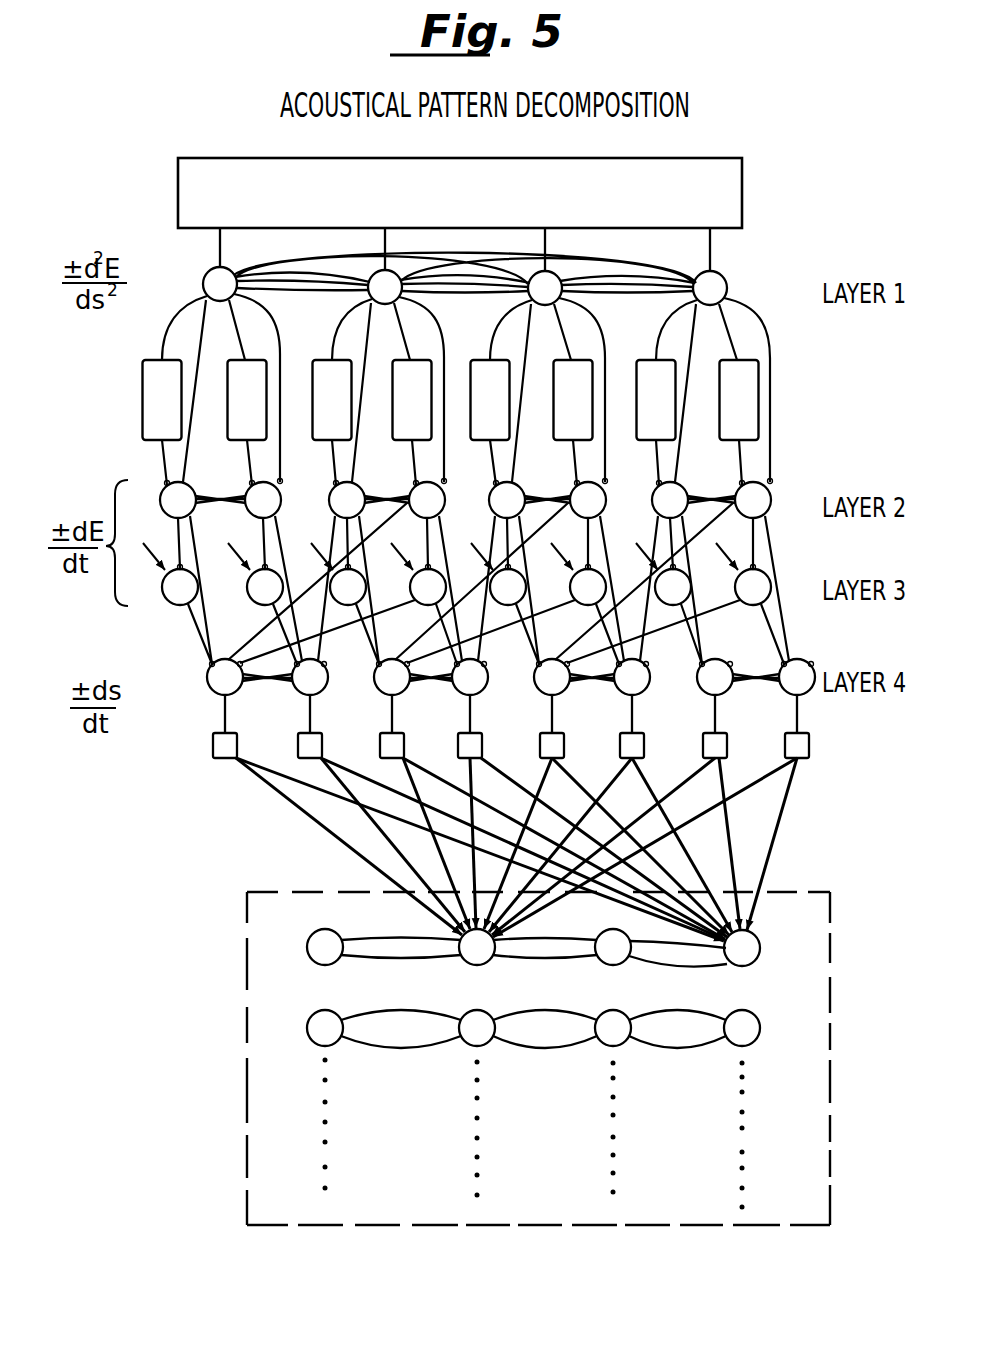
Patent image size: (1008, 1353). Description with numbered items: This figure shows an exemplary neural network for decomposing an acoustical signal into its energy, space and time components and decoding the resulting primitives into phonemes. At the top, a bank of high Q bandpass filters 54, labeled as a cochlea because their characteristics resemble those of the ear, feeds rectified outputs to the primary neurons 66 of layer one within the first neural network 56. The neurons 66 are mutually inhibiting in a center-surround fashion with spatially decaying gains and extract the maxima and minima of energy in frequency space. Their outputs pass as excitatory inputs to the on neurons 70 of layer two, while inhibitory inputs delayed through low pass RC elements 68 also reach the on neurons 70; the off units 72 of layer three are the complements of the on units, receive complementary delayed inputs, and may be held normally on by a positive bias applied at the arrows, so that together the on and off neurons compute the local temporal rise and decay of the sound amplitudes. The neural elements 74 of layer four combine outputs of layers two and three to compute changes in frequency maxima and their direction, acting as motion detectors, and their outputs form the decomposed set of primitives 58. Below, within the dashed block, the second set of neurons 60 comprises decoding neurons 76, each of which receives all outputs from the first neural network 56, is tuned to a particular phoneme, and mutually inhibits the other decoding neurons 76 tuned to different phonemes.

The bandpass filters 54 is at (733, 212).
The primary neurons 66 is at (742, 279).
The first neural network 56 is at (840, 402).
The RC elements 68 is at (237, 427).
The on neurons 70 is at (257, 501).
The off units 72 is at (181, 590).
The neural elements 74 is at (297, 680).
The decomposed set of primitives 58 is at (303, 751).
The second set of neurons 60 is at (247, 1027).
The decoding neurons 76 is at (330, 1018).